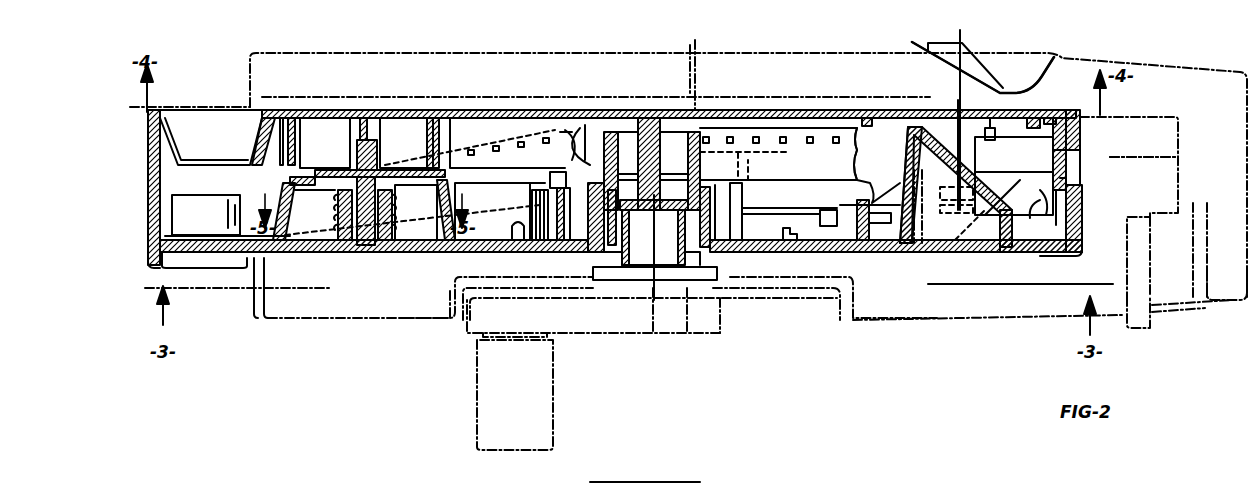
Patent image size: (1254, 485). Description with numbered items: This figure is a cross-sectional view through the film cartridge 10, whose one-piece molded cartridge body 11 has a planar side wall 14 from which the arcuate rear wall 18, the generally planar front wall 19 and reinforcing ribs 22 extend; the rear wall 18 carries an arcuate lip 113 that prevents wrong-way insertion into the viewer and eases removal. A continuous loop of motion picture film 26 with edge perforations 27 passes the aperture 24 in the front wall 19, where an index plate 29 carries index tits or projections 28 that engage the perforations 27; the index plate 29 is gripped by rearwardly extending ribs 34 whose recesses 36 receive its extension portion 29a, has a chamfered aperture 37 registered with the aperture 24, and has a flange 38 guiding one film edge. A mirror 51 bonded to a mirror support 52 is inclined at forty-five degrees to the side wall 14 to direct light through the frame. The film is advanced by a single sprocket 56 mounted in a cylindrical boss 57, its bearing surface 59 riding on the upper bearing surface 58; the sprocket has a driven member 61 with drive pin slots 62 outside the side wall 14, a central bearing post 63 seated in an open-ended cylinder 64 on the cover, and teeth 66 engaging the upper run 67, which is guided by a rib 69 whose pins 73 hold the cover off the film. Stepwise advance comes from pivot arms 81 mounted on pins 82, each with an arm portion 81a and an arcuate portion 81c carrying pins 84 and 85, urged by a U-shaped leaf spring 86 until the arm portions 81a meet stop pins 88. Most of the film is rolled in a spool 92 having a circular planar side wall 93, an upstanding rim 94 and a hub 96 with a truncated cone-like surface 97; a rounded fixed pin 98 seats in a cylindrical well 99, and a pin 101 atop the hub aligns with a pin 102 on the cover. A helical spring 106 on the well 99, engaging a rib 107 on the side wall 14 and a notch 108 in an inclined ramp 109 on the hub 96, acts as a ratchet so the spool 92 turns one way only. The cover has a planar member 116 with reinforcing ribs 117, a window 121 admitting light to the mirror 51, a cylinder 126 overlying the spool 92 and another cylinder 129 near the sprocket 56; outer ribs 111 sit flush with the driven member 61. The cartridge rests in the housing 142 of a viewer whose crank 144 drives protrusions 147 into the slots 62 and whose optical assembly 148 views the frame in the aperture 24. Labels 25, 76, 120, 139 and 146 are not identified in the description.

The film cartridge 10 is at (616, 480).
The cartridge body 11 is at (306, 250).
The side wall 14 is at (441, 251).
The arcuate rear wall 18 is at (162, 180).
The front wall 19 is at (1066, 212).
The reinforcing ribs 22 is at (795, 249).
The aperture 24 is at (1060, 191).
The shaft 25 is at (1062, 160).
The length of motion picture film 26 is at (831, 135).
The perforations 27 is at (789, 134).
The index tits or projections 28 is at (995, 212).
The index plate 29 is at (1060, 124).
The extension portion 29a is at (1048, 216).
The rearwardly extending ribs 34 is at (1016, 251).
The recesses 36 is at (1067, 228).
The chamfered aperture 37 is at (1090, 176).
The flange 38 is at (1050, 116).
The mirror 51 is at (984, 162).
The mirror support 52 is at (906, 160).
The sprocket 56 is at (700, 130).
The cylindrical boss 57 is at (742, 192).
The upper bearing surface 58 is at (722, 175).
The bearing surface 59 is at (692, 150).
The driven member 61 is at (605, 250).
The drive pin slots 62 is at (712, 254).
The central bearing post 63 is at (668, 125).
The open-ended cylinder 64 is at (642, 122).
The teeth 66 is at (590, 135).
The upper run 67 is at (858, 170).
The rib 69 is at (568, 145).
The pins 73 is at (561, 163).
The contact strip 76 is at (772, 160).
The pivot arms 81 is at (962, 116).
The first arm portion 81a is at (900, 250).
The arcuate portion 81c is at (953, 252).
The pins 82 is at (926, 254).
The pins 84 is at (1000, 130).
The pins 85 is at (966, 252).
The spring 86 is at (820, 200).
The stop pins 88 is at (864, 250).
The spool 92 is at (522, 234).
The circular planar side wall 93 is at (486, 251).
The rim or flange 94 is at (552, 251).
The hub 96 is at (455, 166).
The truncated cone-like surface 97 is at (465, 188).
The fixed pin 98 is at (345, 214).
The cylindrical recess or well 99 is at (356, 253).
The pin or spindle 101 is at (355, 153).
The pin 102 is at (353, 138).
The helical spring 106 is at (386, 250).
The protrusion or rib 107 is at (338, 252).
The notch 108 is at (402, 206).
The ramp 109 is at (408, 178).
The ribs 111 is at (1042, 258).
The arcuate extension or lip 113 is at (185, 270).
The planar side or member 116 is at (510, 118).
The reinforcing ribs 117 is at (870, 118).
The cover plate 120 is at (972, 76).
The window 121 is at (962, 92).
The cylinder 126 is at (433, 115).
The cylinder 129 is at (696, 108).
The hopper wall 139 is at (198, 124).
The housing 142 is at (431, 336).
The crank 144 is at (585, 336).
The motor shaft 146 is at (655, 332).
The pins or protrusions 147 is at (688, 325).
The optical assembly 148 is at (1166, 118).